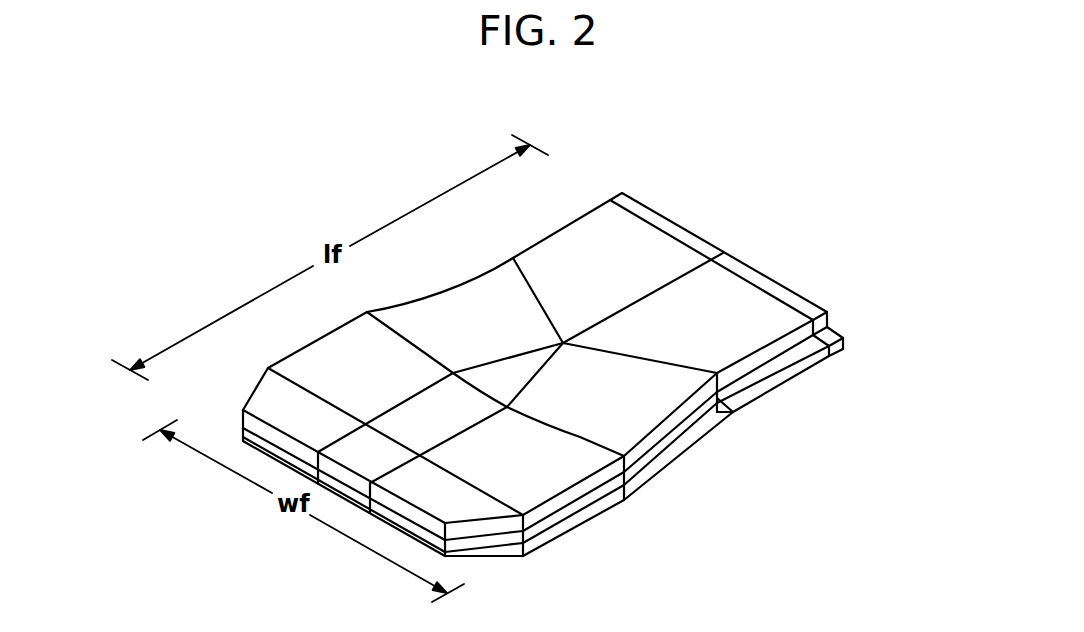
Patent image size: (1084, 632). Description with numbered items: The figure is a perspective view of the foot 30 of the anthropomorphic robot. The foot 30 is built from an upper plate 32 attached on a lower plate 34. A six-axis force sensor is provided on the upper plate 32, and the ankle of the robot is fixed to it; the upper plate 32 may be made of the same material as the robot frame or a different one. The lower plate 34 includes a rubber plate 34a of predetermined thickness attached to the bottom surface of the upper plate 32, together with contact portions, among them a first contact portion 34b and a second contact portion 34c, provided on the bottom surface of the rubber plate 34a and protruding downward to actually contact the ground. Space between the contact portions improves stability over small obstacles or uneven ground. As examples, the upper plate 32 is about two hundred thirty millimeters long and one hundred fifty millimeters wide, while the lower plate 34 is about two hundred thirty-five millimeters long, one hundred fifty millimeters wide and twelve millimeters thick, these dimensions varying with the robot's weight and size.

The foot 30 is at (822, 206).
The upper plate 32 is at (256, 388).
The lower plate 34 is at (838, 327).
The rubber plate 34a is at (342, 492).
The first contact portion 34b is at (582, 512).
The second contact portion 34c is at (788, 379).